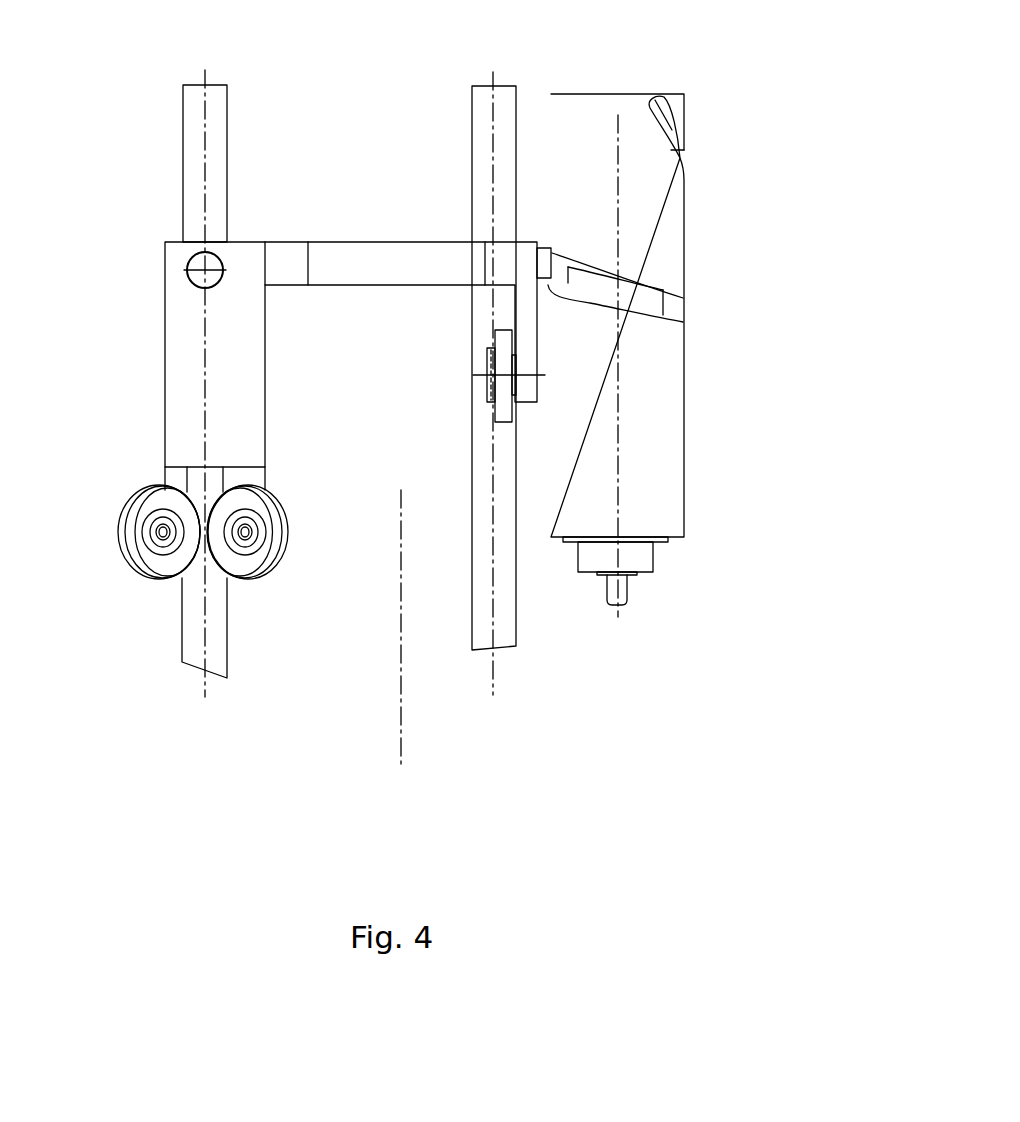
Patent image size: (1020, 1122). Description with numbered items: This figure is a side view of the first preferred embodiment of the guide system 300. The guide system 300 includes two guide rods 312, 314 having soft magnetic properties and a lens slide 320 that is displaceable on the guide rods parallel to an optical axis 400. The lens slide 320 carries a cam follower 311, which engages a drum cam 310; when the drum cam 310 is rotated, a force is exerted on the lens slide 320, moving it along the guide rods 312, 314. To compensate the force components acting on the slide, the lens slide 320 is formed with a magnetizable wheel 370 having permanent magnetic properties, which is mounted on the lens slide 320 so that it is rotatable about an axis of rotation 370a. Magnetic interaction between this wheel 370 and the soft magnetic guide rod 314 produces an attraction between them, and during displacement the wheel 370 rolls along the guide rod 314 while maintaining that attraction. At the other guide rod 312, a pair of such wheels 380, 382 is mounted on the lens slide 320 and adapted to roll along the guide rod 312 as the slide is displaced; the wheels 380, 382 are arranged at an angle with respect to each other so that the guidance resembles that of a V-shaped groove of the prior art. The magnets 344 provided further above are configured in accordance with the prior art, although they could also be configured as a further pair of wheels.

The guide system 300 is at (762, 148).
The drum cam 310 is at (658, 240).
The cam follower 311 is at (546, 262).
The guide rod 312 is at (190, 165).
The guide rod 314 is at (502, 627).
The lens slide 320 is at (410, 260).
The magnets 344 is at (200, 263).
The magnetizable wheel 370 is at (493, 395).
The axis of rotation 370a is at (480, 375).
The wheel 380 is at (128, 577).
The wheel 382 is at (277, 572).
The optical axis 400 is at (412, 735).